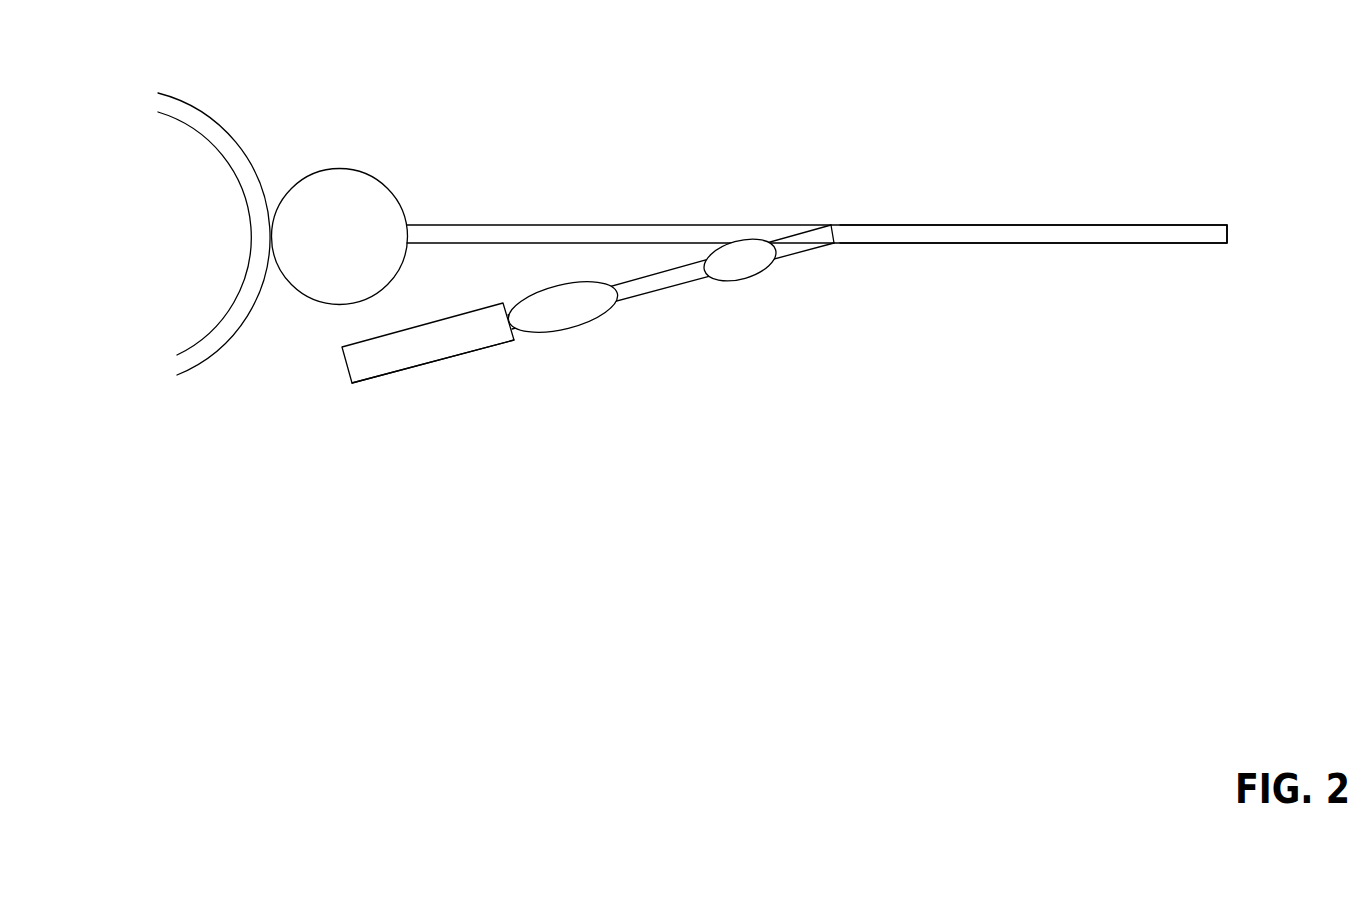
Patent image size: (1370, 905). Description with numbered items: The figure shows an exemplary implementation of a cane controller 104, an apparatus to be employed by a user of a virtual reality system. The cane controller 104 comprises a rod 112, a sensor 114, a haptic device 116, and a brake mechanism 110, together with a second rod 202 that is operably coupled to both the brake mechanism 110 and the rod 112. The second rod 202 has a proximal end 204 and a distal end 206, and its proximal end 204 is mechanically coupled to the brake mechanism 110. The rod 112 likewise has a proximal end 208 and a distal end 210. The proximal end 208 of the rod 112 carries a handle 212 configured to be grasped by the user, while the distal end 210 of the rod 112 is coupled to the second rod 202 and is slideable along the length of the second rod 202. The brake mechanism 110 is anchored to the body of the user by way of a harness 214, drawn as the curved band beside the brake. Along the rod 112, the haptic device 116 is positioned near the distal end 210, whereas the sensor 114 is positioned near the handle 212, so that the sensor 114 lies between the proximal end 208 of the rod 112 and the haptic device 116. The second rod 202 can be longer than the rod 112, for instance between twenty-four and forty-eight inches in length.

The cane controller 104 is at (1005, 155).
The brake mechanism 110 is at (357, 168).
The rod 112 is at (655, 297).
The sensor 114 is at (545, 292).
The haptic device 116 is at (748, 280).
The second rod 202 is at (1040, 243).
The proximal end 204 is at (410, 224).
The distal end 206 is at (1227, 232).
The proximal end 208 is at (343, 365).
The distal end 210 is at (833, 226).
The handle 212 is at (423, 363).
The harness 214 is at (238, 300).